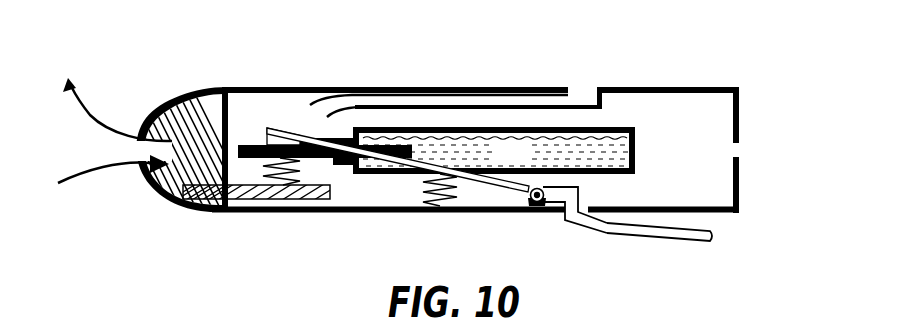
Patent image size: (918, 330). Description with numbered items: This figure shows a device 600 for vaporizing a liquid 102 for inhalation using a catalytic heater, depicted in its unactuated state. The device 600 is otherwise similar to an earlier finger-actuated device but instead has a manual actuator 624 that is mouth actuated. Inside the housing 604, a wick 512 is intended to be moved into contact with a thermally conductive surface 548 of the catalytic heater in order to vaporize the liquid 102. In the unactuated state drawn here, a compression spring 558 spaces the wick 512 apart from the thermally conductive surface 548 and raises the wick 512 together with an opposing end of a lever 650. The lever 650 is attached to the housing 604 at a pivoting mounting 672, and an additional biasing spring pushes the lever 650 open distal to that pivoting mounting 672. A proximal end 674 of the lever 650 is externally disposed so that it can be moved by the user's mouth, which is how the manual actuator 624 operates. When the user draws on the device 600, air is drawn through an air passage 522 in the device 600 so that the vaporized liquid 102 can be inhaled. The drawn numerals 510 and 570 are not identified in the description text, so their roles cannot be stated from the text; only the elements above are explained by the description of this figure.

The device 600 is at (211, 89).
The housing 604 is at (287, 87).
The lever 650 is at (270, 127).
The wick 510 is at (397, 126).
The air passage 522 is at (508, 93).
The liquid 102 is at (494, 150).
The wick 512 is at (333, 160).
The thermally conductive surface 548 is at (254, 200).
The compression spring 558 is at (294, 186).
The spring 570 is at (428, 202).
The pivoting mounting 672 is at (531, 201).
The proximal end 674 is at (566, 223).
The manual actuator 624 is at (587, 241).